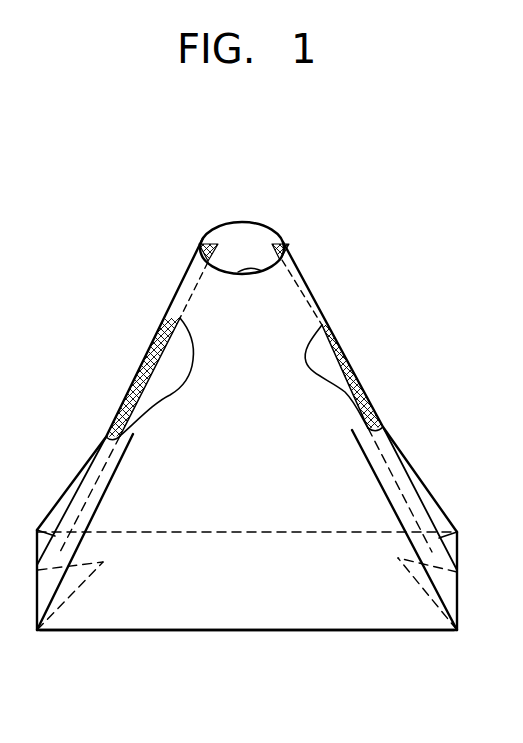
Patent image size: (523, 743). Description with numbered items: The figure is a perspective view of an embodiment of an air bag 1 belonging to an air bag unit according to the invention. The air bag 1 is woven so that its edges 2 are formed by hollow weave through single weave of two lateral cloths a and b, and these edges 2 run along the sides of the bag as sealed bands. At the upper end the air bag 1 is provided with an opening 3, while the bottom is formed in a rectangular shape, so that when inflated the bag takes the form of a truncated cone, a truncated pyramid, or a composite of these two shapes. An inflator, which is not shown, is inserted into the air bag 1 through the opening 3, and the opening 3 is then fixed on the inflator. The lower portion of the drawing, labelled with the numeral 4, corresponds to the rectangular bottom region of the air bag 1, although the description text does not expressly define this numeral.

The air bag 1 is at (145, 310).
The edges 2 is at (208, 244).
The opening 3 is at (265, 273).
The bottom 4 is at (215, 631).
The lateral cloth a is at (219, 307).
The lateral cloth b is at (250, 236).